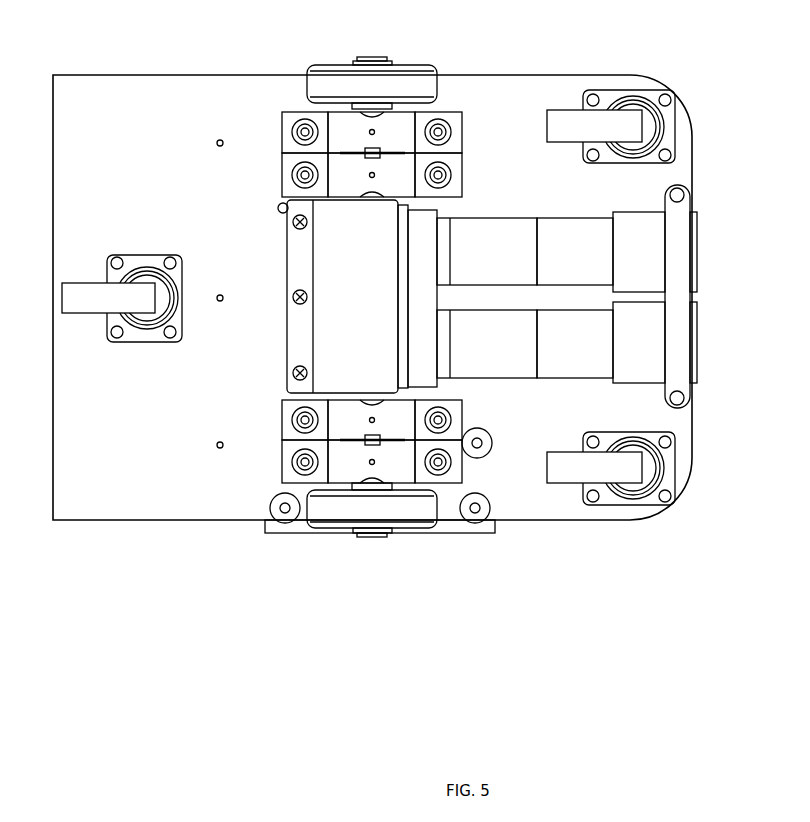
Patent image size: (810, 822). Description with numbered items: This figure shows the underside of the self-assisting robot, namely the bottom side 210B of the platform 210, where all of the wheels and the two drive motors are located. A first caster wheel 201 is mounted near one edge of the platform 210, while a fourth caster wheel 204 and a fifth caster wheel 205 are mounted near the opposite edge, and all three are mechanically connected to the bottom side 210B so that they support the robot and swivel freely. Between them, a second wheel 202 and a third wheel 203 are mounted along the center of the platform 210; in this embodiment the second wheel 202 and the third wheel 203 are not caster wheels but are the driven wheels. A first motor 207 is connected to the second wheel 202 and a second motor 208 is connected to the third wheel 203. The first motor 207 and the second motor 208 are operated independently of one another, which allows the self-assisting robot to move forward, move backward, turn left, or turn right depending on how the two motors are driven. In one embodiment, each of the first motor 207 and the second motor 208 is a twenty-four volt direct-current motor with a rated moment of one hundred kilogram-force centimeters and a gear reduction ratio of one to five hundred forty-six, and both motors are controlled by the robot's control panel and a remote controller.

The first caster wheel 201 is at (62, 298).
The second wheel 202 is at (338, 533).
The third wheel 203 is at (338, 66).
The fourth caster wheel 204 is at (557, 483).
The fifth caster wheel 205 is at (567, 110).
The first motor 207 is at (692, 358).
The second motor 208 is at (692, 249).
The platform 210 is at (167, 75).
The bottom side 210B is at (102, 427).